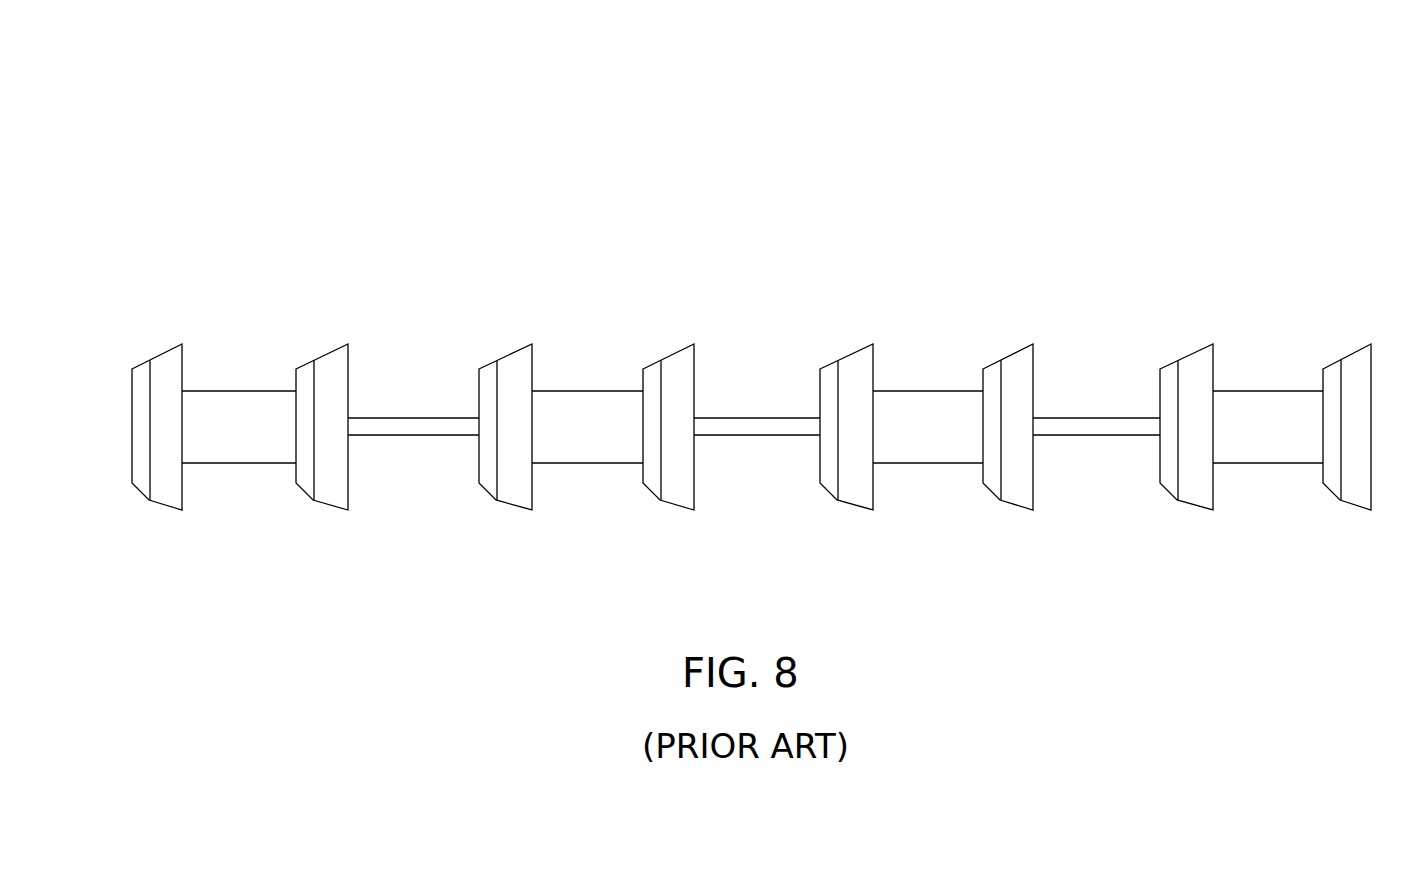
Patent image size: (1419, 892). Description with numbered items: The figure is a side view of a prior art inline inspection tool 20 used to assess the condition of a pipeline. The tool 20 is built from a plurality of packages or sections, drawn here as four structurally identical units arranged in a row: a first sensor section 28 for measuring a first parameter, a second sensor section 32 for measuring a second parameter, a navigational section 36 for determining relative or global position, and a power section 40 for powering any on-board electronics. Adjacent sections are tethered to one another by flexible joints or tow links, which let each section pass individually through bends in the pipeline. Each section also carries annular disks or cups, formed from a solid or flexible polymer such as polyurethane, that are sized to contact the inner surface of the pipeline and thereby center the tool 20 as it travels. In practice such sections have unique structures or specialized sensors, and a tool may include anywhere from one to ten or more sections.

The ILI tool 20 is at (300, 160).
The first sensor section 28 is at (242, 465).
The second sensor section 32 is at (580, 465).
The navigational section 36 is at (935, 467).
The power section 40 is at (1275, 465).